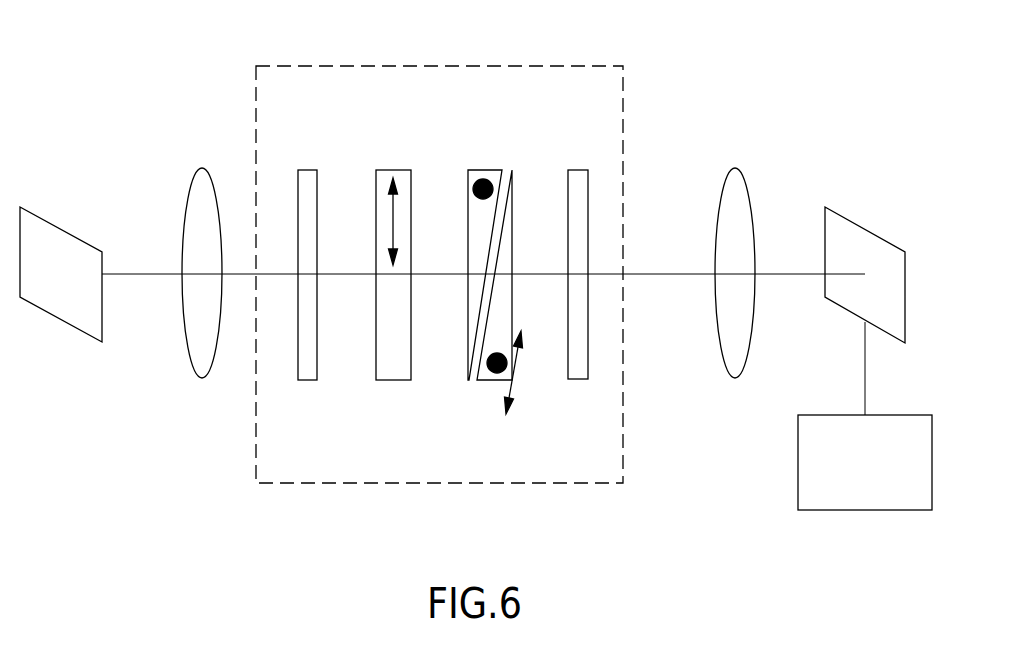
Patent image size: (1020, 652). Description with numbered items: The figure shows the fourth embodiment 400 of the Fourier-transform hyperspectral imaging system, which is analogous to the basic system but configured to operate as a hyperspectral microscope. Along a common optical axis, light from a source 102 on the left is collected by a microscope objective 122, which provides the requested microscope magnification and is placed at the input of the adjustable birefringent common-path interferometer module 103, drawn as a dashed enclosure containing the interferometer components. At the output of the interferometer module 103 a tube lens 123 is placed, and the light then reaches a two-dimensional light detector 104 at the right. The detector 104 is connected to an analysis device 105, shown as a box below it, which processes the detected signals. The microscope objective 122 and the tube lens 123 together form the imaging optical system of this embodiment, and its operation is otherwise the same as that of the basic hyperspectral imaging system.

The fourth embodiment 400 is at (497, 33).
The adjustable birefringent common-path interferometer module 103 is at (656, 63).
The light source 102 is at (50, 223).
The microscope objective 122 is at (192, 358).
The tube lens 123 is at (718, 213).
The two-dimensional light detector 104 is at (867, 230).
The analysis device 105 is at (798, 462).